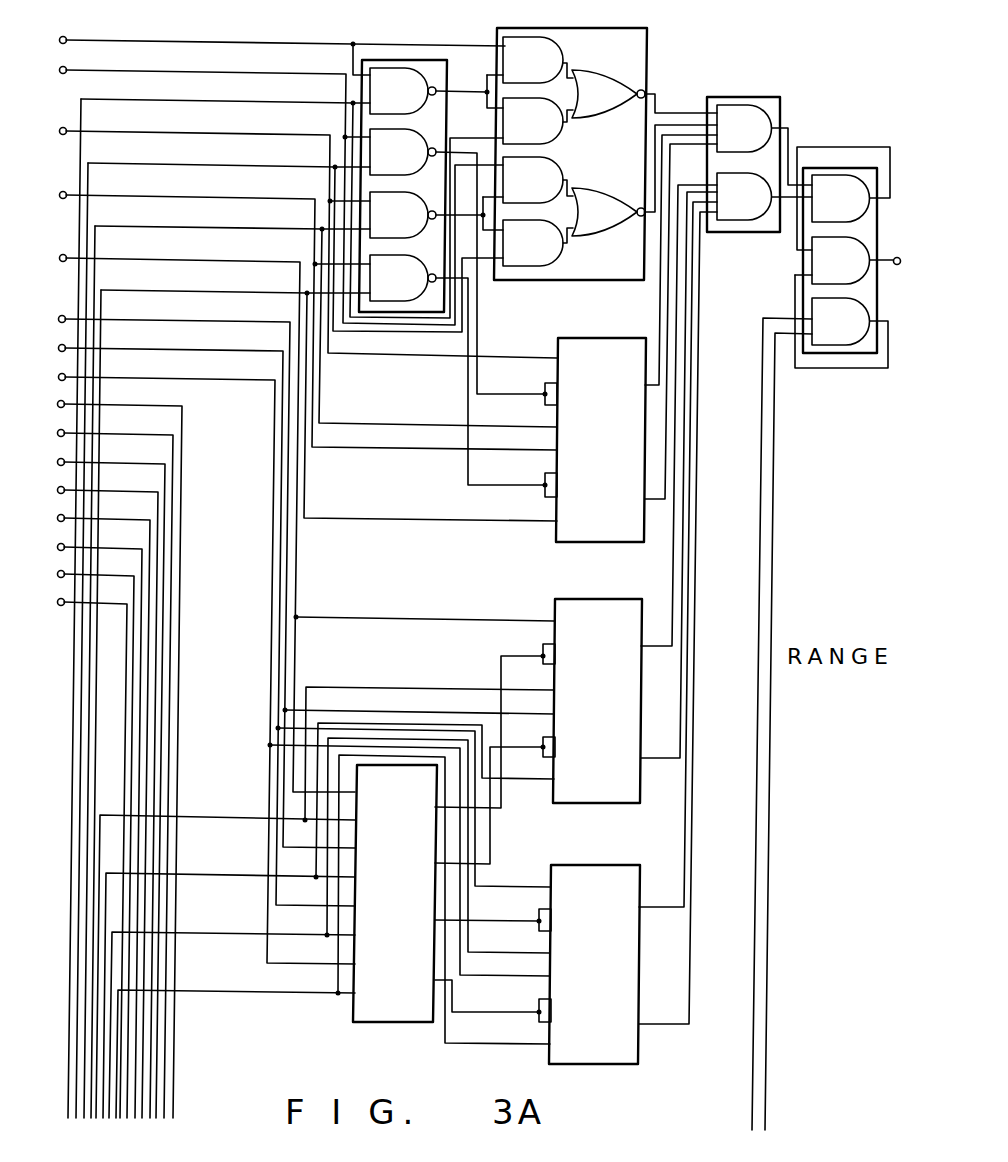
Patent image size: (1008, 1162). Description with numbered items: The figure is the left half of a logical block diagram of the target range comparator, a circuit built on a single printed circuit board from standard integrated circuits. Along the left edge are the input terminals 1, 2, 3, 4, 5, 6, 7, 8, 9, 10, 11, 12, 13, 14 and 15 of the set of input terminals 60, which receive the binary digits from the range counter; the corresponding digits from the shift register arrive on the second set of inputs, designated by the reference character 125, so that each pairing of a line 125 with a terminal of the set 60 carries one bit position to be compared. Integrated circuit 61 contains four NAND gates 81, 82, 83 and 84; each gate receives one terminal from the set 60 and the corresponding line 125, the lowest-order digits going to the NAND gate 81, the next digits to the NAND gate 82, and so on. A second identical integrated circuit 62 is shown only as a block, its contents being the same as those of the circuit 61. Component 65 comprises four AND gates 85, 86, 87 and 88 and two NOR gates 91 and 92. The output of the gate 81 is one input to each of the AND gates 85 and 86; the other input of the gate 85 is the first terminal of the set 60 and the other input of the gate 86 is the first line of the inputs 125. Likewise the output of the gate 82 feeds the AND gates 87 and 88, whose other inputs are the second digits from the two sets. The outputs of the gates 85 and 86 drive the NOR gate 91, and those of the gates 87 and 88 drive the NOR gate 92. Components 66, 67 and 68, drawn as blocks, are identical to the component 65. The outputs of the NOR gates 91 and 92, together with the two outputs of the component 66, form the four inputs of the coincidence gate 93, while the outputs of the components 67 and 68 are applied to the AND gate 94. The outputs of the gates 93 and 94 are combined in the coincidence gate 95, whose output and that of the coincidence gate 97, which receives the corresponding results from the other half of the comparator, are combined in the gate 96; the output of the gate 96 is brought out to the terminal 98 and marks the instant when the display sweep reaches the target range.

The input terminal 1 is at (283, 45).
The input terminal 2 is at (280, 185).
The input terminal 3 is at (307, 233).
The input terminal 4 is at (307, 311).
The input terminal 5 is at (305, 513).
The input terminal 6 is at (305, 572).
The input terminal 7 is at (303, 616).
The input terminal 8 is at (303, 666).
The input terminal 9 is at (119, 750).
The input terminal 10 is at (111, 764).
The antenna simulator 11 is at (107, 778).
The input terminal 12 is at (104, 793).
The input terminal 13 is at (100, 807).
The range counter 14 is at (96, 821).
The clock 15 is at (92, 835).
The set of input terminals 60 is at (85, 851).
The integrated circuit 61 is at (440, 76).
The integrated circuit 62 is at (356, 1010).
The component 65 is at (648, 62).
The component 66 is at (603, 348).
The component 67 is at (605, 608).
The component 68 is at (605, 874).
The NAND gate 81 is at (383, 100).
The NAND gate 82 is at (383, 161).
The NAND gate 83 is at (383, 224).
The NAND gate 84 is at (383, 287).
The AND gate 85 is at (518, 69).
The AND gate 86 is at (518, 130).
The AND gate 87 is at (518, 189).
The AND gate 88 is at (518, 252).
The NOR gate 91 is at (592, 103).
The NOR gate 92 is at (592, 221).
The coincidence gate 93 is at (730, 137).
The AND gate 94 is at (730, 205).
The coincidence gate 95 is at (826, 207).
The coincidence gate 96 is at (826, 269).
The coincidence gate 97 is at (826, 330).
The terminal 98 is at (897, 256).
The inputs from the shift register 125 is at (248, 101).